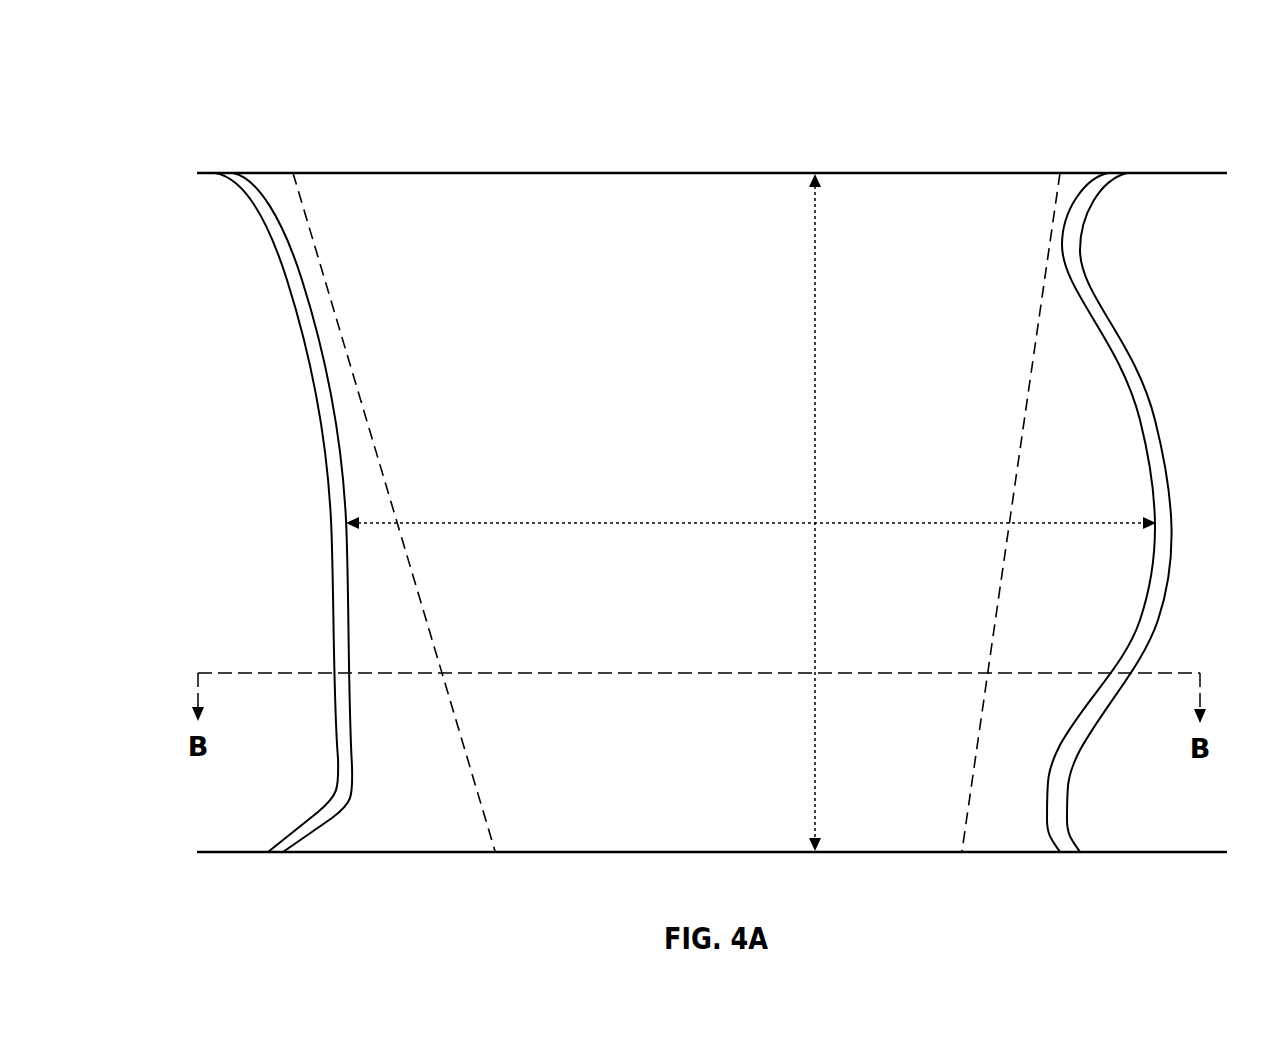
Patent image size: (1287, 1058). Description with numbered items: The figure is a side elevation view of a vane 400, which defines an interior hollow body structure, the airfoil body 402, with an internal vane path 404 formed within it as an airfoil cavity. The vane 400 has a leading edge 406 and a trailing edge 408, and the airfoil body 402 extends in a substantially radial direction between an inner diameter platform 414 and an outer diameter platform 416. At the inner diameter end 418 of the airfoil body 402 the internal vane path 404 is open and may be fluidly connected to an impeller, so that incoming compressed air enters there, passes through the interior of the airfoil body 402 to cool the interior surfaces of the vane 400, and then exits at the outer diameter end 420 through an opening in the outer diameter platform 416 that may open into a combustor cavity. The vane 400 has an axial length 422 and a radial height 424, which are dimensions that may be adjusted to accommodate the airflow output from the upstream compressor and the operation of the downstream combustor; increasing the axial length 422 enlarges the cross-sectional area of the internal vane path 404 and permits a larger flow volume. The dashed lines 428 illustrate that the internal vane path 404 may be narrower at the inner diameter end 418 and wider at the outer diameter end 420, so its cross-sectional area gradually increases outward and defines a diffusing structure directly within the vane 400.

The vane 400 is at (1182, 88).
The airfoil body 402 is at (887, 172).
The internal vane path 404 is at (737, 203).
The leading edge 406 is at (327, 492).
The trailing edge 408 is at (1147, 397).
The inner diameter platform 414 is at (237, 853).
The outer diameter platform 416 is at (268, 172).
The inner diameter end 418 is at (198, 834).
The outer diameter end 420 is at (189, 174).
The axial length 422 is at (920, 524).
The radial height 424 is at (815, 397).
The dashed lines 428 is at (482, 800).